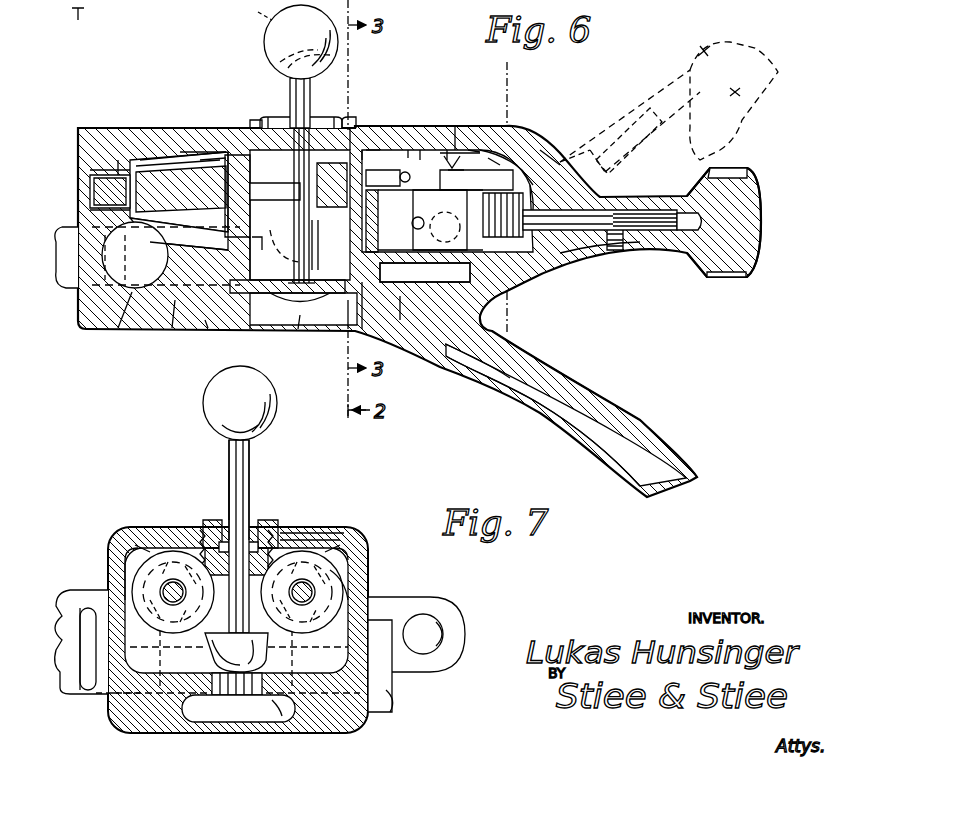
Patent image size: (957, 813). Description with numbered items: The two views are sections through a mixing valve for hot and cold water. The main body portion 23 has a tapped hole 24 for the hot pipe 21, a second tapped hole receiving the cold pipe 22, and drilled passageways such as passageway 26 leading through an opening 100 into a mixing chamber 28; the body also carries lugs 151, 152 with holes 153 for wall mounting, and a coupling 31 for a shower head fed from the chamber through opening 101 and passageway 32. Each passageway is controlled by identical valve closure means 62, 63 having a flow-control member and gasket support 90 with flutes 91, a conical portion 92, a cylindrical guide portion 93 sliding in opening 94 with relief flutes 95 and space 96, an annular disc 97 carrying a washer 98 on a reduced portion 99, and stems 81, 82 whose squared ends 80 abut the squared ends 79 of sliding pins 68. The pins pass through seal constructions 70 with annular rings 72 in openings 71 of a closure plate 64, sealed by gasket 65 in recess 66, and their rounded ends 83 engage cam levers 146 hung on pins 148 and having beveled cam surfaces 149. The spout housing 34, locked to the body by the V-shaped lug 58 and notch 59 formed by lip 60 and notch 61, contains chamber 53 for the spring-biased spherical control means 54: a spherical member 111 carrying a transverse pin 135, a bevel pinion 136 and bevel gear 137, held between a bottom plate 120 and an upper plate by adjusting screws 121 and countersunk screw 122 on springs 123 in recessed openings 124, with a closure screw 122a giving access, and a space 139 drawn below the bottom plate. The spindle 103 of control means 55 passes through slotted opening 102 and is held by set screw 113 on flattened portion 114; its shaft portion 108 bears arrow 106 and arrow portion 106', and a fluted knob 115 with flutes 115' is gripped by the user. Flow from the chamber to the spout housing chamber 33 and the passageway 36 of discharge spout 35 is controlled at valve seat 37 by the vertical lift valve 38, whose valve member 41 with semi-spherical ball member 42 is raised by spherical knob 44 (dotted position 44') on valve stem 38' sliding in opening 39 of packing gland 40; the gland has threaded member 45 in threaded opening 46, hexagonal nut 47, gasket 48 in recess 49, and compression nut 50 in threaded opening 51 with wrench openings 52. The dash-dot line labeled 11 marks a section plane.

In FIG. 6, the section line 11- 11 is at (503, 75).
In FIG. 7, the hot water pipe 21 is at (100, 702).
In FIG. 7, the cold water pipe 22 is at (384, 702).
In FIG. 6, the main body portion 23 is at (92, 130).
In FIG. 7, the main body portion 23 is at (112, 544).
In FIG. 6, the tapped hole 24 is at (132, 292).
In FIG. 6, the drilled passageway 26 is at (143, 160).
In FIG. 6, the mixing chamber 28 is at (248, 254).
In FIG. 7, the mixing chamber 28 is at (128, 572).
In FIG. 6, the pipe or coupling 31 is at (64, 292).
In FIG. 6, the passageway 32 is at (172, 300).
In FIG. 7, the passageway 32 is at (285, 664).
In FIG. 6, the chamber 33 is at (300, 316).
In FIG. 7, the chamber 33 is at (206, 706).
In FIG. 6, the spout housing 34 is at (458, 124).
In FIG. 6, the discharge spout 35 is at (592, 388).
In FIG. 6, the passageway 36 is at (572, 400).
In FIG. 6, the combined opening and valve seat 37 is at (250, 326).
In FIG. 7, the combined opening and valve seat 37 is at (272, 709).
In FIG. 7, the vertical lift valve 38 is at (263, 475).
In FIG. 6, the valve stem 38' is at (277, 99).
In FIG. 7, the valve stem 38' is at (213, 487).
In FIG. 7, the opening 39 is at (232, 522).
In FIG. 7, the packing gland 40 is at (290, 516).
In FIG. 6, the valve member 41 is at (294, 289).
In FIG. 7, the valve member 41 is at (206, 641).
In FIG. 7, the semi-spherical ball member 42 is at (212, 658).
In FIG. 6, the spherical knob 44 is at (284, 42).
In FIG. 7, the spherical knob 44 is at (222, 403).
In FIG. 6, the dotted position of spherical knob 44' is at (248, 15).
In FIG. 6, the threaded member 45 is at (256, 124).
In FIG. 7, the threaded opening 46 is at (302, 546).
In FIG. 6, the ornamental hexagonal nut 47 is at (278, 117).
In FIG. 7, the ornamental hexagonal nut 47 is at (256, 513).
In FIG. 7, the gasket 48 is at (266, 520).
In FIG. 7, the recess 49 is at (224, 534).
In FIG. 7, the compression nut 50 is at (205, 548).
In FIG. 7, the threaded opening 51 is at (173, 592).
In FIG. 7, the openings 52 is at (302, 592).
In FIG. 6, the chamber 53 is at (472, 353).
In FIG. 6, the spring-biased spherical control means 54 is at (448, 150).
In FIG. 6, the control means 55 is at (672, 258).
In FIG. 6, the V-shaped transversely extending lug 58 is at (356, 126).
In FIG. 6, the V-shaped notch 59 is at (340, 124).
In FIG. 6, the transversely extending lip 60 is at (370, 132).
In FIG. 6, the transversely extending notch 61 is at (362, 126).
In FIG. 6, the valve closure means 62 is at (178, 202).
In FIG. 7, the valve closure means 62 is at (140, 550).
In FIG. 7, the valve closure means 63 is at (325, 576).
In FIG. 6, the closure plate 64 is at (420, 220).
In FIG. 6, the gasket 65 is at (287, 301).
In FIG. 6, the recess 66 is at (348, 300).
In FIG. 6, the sliding pins 68 is at (385, 177).
In FIG. 6, the seal construction 70 is at (342, 197).
In FIG. 6, the openings 71 is at (326, 245).
In FIG. 6, the annular ring 72 is at (368, 221).
In FIG. 6, the squared ends 79 is at (301, 205).
In FIG. 6, the squared ends 80 is at (292, 198).
In FIG. 6, the stem 81 is at (250, 196).
In FIG. 7, the stem 81 is at (172, 596).
In FIG. 7, the stem 82 is at (312, 594).
In FIG. 6, the rounded ends 83 is at (412, 220).
In FIG. 6, the flow-control member and gasket support 90 is at (185, 152).
In FIG. 6, the flutes 91 is at (210, 160).
In FIG. 7, the flutes 91 is at (150, 540).
In FIG. 6, the conical portion 92 is at (163, 163).
In FIG. 6, the smaller cylindrical portion 93 is at (92, 193).
In FIG. 6, the cylindrical opening 94 is at (90, 175).
In FIG. 6, the flutes 95 is at (115, 160).
In FIG. 6, the cylindrical space 96 is at (95, 208).
In FIG. 6, the annular disc 97 is at (256, 258).
In FIG. 7, the annular disc 97 is at (118, 540).
In FIG. 6, the annular disc washer 98 is at (228, 250).
In FIG. 6, the reduced portion 99 is at (235, 215).
In FIG. 6, the opening 100 is at (166, 255).
In FIG. 6, the opening 101 is at (205, 322).
In FIG. 7, the opening 101 is at (135, 707).
In FIG. 6, the slotted opening 102 is at (540, 172).
In FIG. 6, the spindle 103 is at (612, 136).
In FIG. 6, the arrow 106 is at (500, 130).
In FIG. 6, the arrow portion 106' is at (575, 148).
In FIG. 6, the elongated shaft portion 108 is at (600, 255).
In FIG. 6, the spherical member 111 is at (452, 251).
In FIG. 6, the Allen set screw 113 is at (634, 268).
In FIG. 6, the flattened portion 114 is at (637, 227).
In FIG. 6, the fluted knob 115 is at (741, 195).
In FIG. 6, the flutes 115' is at (746, 163).
In FIG. 6, the bottom plate 120 is at (371, 305).
In FIG. 6, the adjusting screws 121 is at (472, 128).
In FIG. 6, the countersunk head machine screw 122 is at (422, 150).
In FIG. 6, the closure countersunk screw 122a is at (408, 150).
In FIG. 6, the springs 123 is at (432, 126).
In FIG. 6, the recessed openings 124 is at (490, 156).
In FIG. 6, the transverse pin 135 is at (443, 227).
In FIG. 6, the bevel pinion 136 is at (597, 256).
In FIG. 6, the bevel gear 137 is at (540, 280).
In FIG. 6, the lower cavity 139 is at (425, 272).
In FIG. 6, the cam lever 146 is at (471, 180).
In FIG. 6, the pins 148 is at (460, 161).
In FIG. 6, the beveled cam surface 149 is at (405, 315).
In FIG. 6, the lug 151 is at (62, 21).
In FIG. 7, the lug 151 is at (60, 662).
In FIG. 7, the lug 152 is at (446, 614).
In FIG. 7, the holes 153 is at (440, 648).